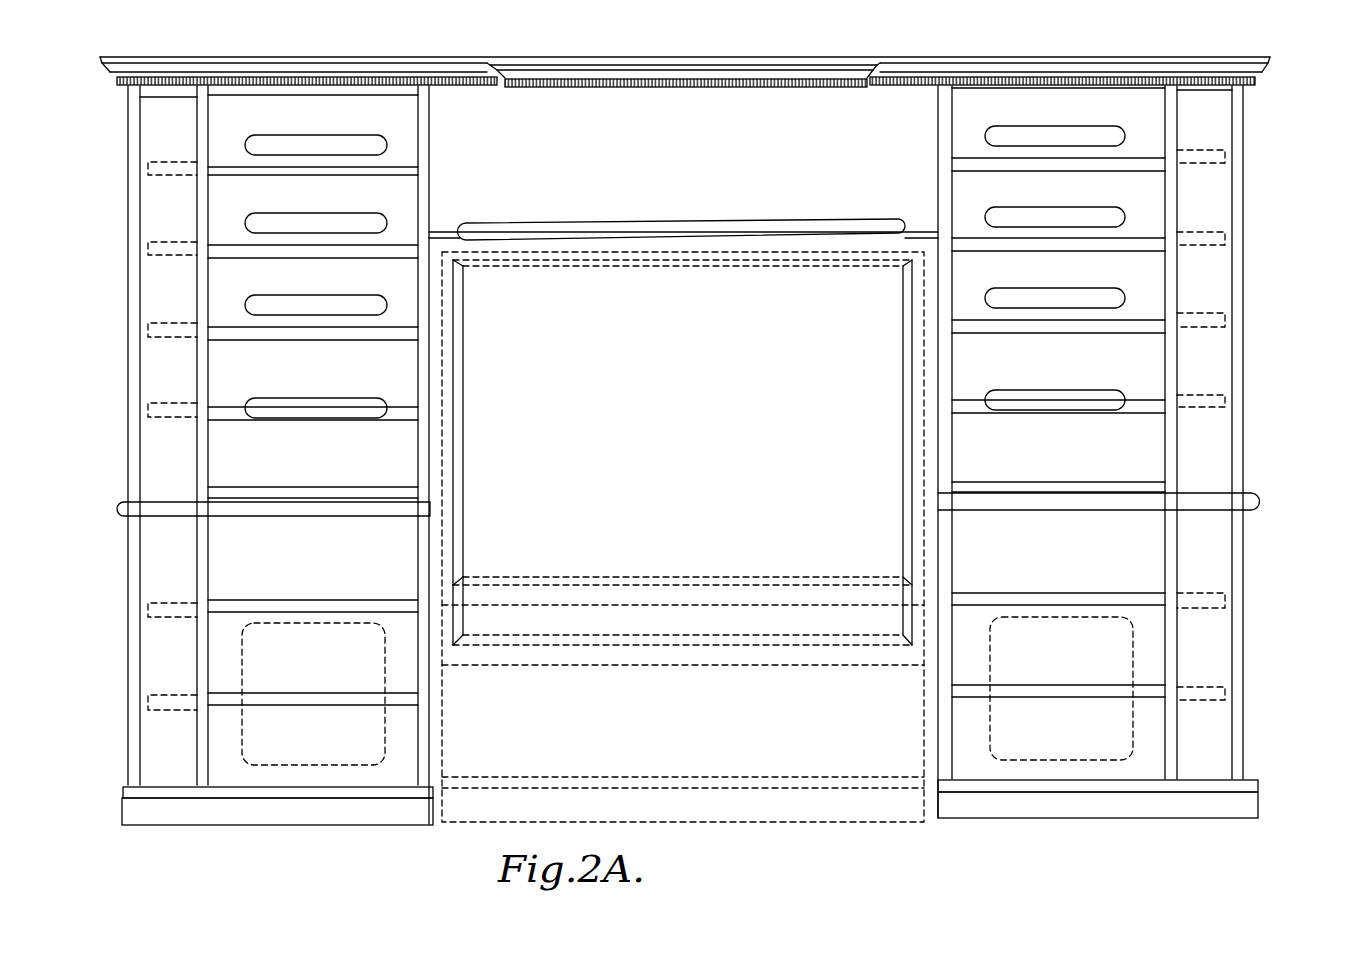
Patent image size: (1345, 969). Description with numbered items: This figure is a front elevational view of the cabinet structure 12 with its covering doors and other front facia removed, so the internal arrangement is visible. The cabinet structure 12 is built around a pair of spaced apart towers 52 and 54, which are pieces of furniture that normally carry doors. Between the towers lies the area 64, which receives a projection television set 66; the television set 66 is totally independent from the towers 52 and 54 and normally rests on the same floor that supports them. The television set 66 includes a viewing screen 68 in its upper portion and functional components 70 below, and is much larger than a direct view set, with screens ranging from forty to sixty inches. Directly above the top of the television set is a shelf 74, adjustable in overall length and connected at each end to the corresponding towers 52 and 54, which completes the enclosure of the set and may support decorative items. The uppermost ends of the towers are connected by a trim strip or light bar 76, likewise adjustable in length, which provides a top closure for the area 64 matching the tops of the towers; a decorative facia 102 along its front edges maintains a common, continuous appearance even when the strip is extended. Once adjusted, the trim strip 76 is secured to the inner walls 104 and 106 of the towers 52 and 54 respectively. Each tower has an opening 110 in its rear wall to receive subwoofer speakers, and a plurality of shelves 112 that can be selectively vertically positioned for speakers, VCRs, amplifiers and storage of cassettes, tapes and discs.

The cabinet structure 12 is at (112, 298).
The tower 52 is at (127, 70).
The tower 54 is at (1263, 60).
The area 64 is at (677, 192).
The projection television set 66 is at (743, 732).
The viewing screen 68 is at (715, 462).
The functional components 70 is at (697, 720).
The shelf 74 is at (730, 227).
The trim strip or light bar 76 is at (627, 70).
The decorative facia 102 is at (818, 82).
The inner wall 104 is at (423, 208).
The inner wall 106 is at (939, 128).
The opening 110 is at (343, 652).
The shelves 112 is at (350, 308).